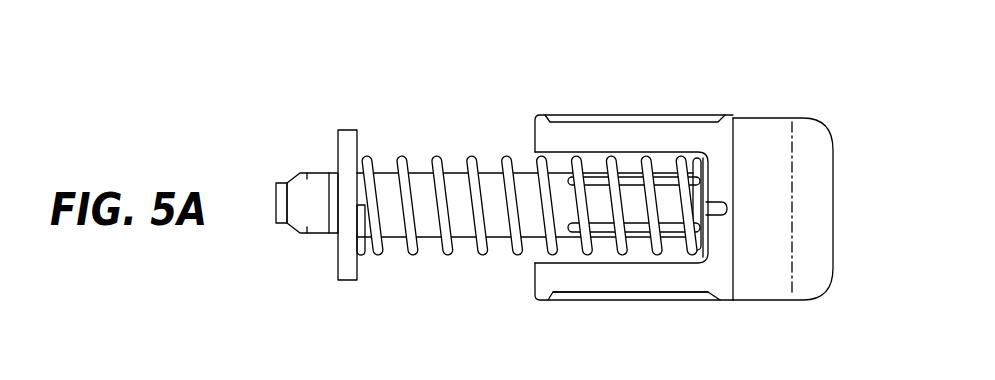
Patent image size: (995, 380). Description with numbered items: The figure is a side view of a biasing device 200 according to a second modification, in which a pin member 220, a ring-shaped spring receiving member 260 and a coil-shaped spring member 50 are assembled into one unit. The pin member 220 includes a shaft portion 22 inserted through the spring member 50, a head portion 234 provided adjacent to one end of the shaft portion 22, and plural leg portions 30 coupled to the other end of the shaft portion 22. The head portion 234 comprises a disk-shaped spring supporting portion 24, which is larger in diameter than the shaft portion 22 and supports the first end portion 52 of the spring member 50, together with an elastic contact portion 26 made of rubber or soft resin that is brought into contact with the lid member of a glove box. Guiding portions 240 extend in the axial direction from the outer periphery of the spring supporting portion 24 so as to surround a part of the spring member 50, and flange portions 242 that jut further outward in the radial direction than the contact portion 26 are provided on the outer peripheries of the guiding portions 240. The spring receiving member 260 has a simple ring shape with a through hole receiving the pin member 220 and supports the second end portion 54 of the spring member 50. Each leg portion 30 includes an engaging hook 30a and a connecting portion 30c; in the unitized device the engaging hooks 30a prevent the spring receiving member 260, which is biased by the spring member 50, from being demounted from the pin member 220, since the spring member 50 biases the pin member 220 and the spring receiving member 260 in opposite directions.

The biasing device 200 is at (531, 361).
The connecting portion 30c is at (282, 202).
The leg portions 30 is at (305, 197).
The engaging hook 30a is at (332, 207).
The spring receiving member 260 is at (347, 132).
The second end portion 54 is at (363, 256).
The shaft portion 22 is at (453, 180).
The pin member 220 is at (645, 136).
The guiding portions 240 is at (583, 130).
The flange portions 242 is at (687, 295).
The head portion 234 is at (740, 153).
The contact portion 26 is at (807, 130).
The spring supporting portion 24 is at (708, 228).
The first end portion 52 is at (697, 160).
The spring member 50 is at (482, 243).